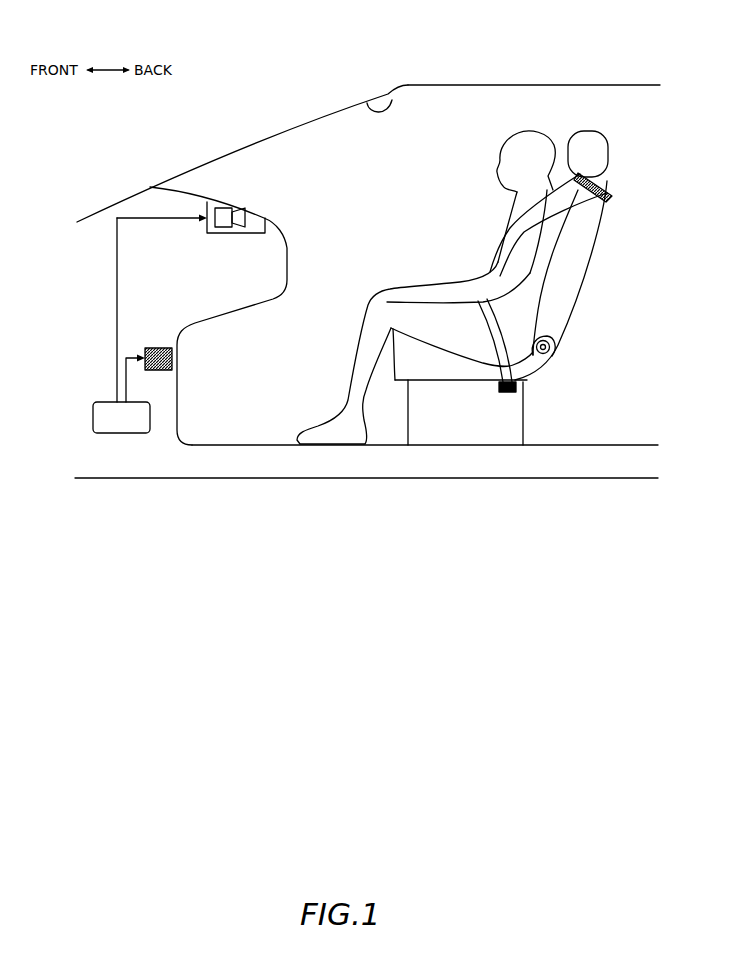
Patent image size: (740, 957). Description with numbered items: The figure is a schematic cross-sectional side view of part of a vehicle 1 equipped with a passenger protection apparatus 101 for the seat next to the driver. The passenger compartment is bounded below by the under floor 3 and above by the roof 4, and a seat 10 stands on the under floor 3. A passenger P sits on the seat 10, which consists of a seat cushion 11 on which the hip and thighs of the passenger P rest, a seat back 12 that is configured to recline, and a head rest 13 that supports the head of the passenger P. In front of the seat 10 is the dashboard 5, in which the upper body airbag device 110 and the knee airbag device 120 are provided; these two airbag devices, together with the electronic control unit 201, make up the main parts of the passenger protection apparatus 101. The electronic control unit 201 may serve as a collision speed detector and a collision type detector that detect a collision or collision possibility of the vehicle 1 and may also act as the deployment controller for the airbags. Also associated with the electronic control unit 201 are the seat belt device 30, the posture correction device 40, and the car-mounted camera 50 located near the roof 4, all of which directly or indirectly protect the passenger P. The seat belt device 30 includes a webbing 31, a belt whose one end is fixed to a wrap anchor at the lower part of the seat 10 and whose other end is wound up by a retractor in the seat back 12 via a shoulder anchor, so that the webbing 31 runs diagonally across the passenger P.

The vehicle 1 is at (368, 116).
The under floor 3 is at (647, 445).
The roof 4 is at (547, 84).
The dashboard 5 is at (180, 193).
The seat 10 is at (528, 302).
The seat cushion 11 is at (460, 368).
The seat back 12 is at (588, 268).
The head rest 13 is at (587, 130).
The seat belt device 30 is at (512, 282).
The webbing 31 is at (542, 282).
The posture correction device 40 is at (551, 350).
The car-mounted camera 50 is at (393, 103).
The passenger protection apparatus 101 is at (111, 442).
The upper body airbag device 110 is at (233, 237).
The knee airbag device 120 is at (160, 347).
The electronic control unit 201 is at (107, 439).
The passenger P is at (529, 138).